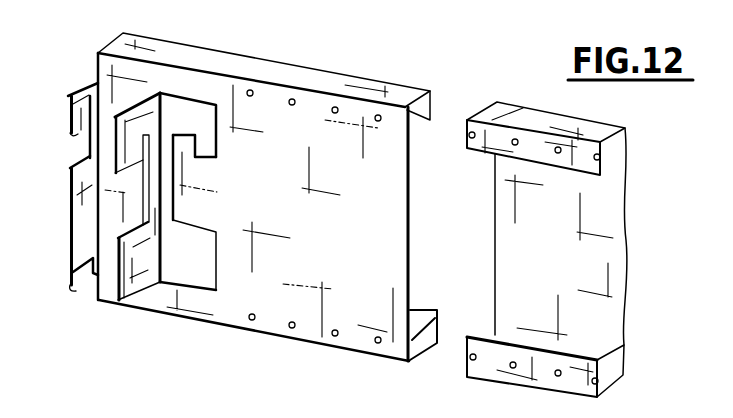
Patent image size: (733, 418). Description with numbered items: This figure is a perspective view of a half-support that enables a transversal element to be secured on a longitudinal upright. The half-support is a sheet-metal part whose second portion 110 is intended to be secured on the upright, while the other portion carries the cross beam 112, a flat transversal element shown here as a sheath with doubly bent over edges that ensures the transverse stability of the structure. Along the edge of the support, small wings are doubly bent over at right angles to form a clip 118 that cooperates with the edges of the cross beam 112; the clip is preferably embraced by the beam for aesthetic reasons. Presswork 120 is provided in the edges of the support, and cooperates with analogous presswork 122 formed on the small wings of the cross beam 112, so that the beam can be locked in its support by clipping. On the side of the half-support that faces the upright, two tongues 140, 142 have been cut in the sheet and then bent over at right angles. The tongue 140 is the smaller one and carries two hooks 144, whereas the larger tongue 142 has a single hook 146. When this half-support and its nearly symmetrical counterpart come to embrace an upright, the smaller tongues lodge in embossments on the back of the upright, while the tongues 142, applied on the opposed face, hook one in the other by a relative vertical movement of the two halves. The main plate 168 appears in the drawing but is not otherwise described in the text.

The second portion 110 is at (99, 300).
The cross beam 112 is at (624, 252).
The doubly bent over small wing 118 is at (433, 107).
The presswork 120 is at (332, 111).
The presswork 122 is at (515, 139).
The tongue 140 is at (80, 210).
The tongue 142 is at (147, 284).
The hook 144 is at (70, 120).
The hook 146 is at (128, 162).
The panel 168 is at (388, 192).